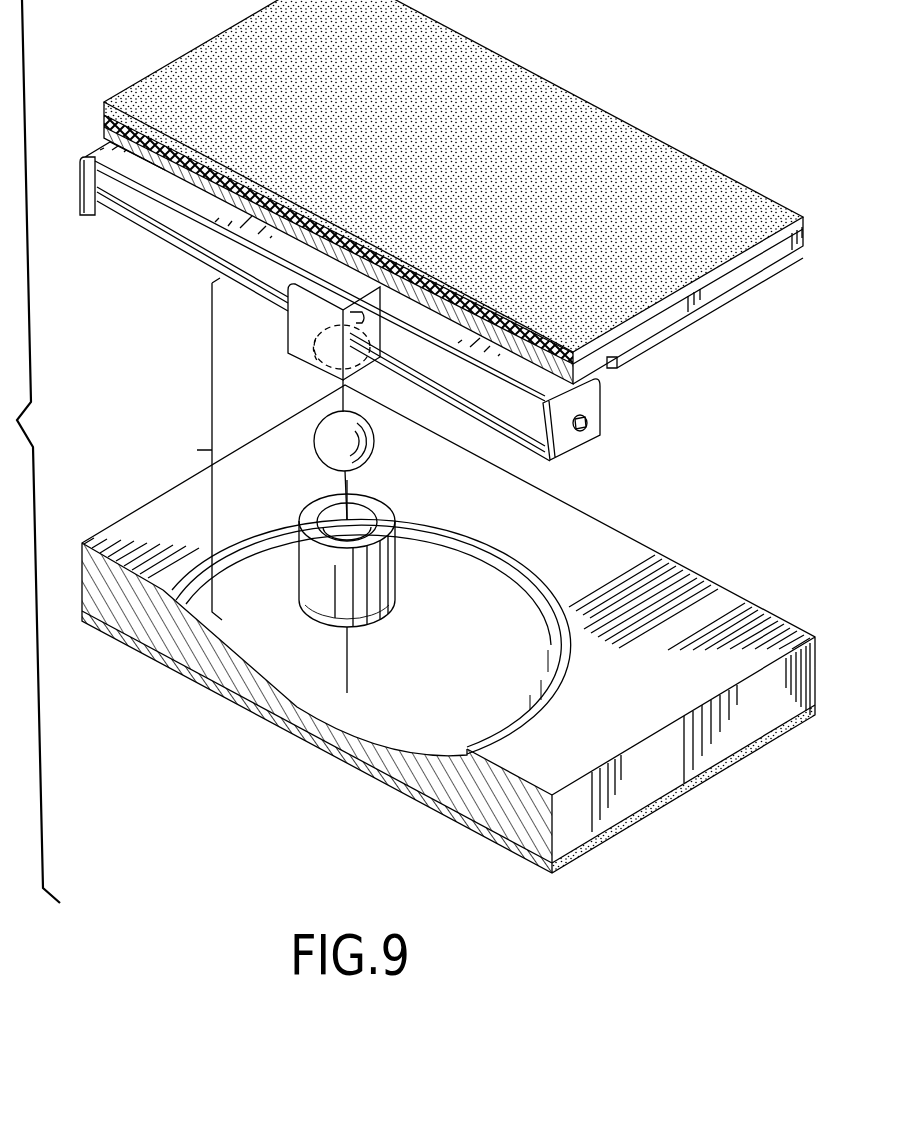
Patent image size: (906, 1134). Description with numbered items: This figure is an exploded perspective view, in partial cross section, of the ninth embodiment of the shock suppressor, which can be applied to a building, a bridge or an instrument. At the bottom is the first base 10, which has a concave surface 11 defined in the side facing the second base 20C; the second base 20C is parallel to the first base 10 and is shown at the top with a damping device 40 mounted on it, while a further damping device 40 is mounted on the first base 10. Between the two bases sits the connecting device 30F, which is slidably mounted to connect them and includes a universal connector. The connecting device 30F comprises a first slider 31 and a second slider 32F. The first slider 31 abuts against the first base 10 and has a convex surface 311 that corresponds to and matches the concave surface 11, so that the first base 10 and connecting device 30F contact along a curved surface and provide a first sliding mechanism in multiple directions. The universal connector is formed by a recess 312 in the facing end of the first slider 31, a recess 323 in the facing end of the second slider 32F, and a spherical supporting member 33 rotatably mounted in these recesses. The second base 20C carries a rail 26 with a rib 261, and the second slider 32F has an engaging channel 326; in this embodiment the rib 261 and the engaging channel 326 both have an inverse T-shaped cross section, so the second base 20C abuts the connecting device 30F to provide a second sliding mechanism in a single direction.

The damping device 40 is at (577, 87).
The second base 20C is at (693, 308).
The rib 261 is at (170, 233).
The rail 26 is at (585, 400).
The second slider 32F is at (302, 312).
The engaging channel 326 is at (370, 320).
The recess 323 is at (318, 366).
The supporting member 33 is at (368, 452).
The connecting device 30F is at (187, 449).
The first base 10 is at (698, 577).
The concave surface 11 is at (535, 688).
The first slider 31 is at (317, 570).
The recess 312 is at (328, 523).
The convex surface 311 is at (370, 627).